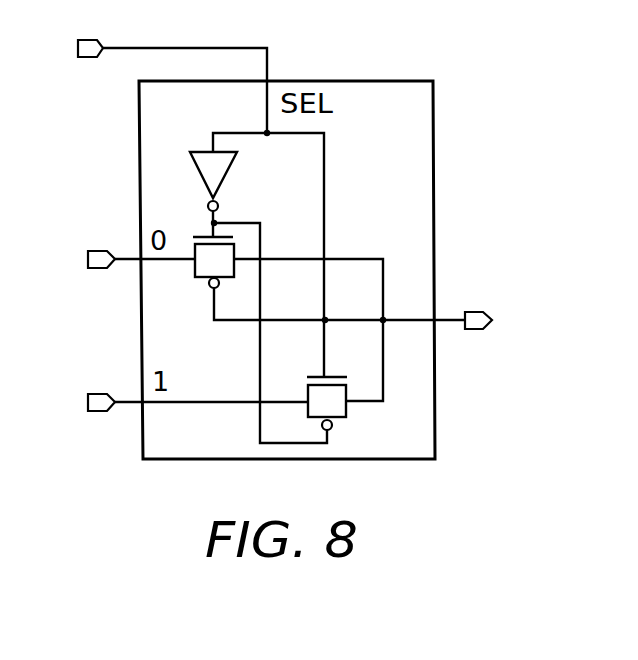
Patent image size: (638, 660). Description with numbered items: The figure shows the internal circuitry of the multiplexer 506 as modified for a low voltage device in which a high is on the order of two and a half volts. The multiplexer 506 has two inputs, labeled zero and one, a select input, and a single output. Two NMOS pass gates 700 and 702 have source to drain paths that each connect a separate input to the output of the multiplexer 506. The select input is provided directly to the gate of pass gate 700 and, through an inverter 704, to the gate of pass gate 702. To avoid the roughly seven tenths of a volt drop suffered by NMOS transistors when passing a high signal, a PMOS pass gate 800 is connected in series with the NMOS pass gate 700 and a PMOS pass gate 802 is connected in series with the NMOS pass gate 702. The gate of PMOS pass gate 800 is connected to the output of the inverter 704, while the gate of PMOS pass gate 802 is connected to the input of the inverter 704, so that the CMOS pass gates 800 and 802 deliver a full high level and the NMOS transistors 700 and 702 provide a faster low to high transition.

The multiplexer 506 is at (333, 270).
The NMOS pass gate 700 is at (306, 371).
The NMOS pass gate 702 is at (155, 222).
The inverter 704 is at (246, 181).
The PMOS pass gate 800 is at (367, 429).
The PMOS pass gate 802 is at (183, 298).